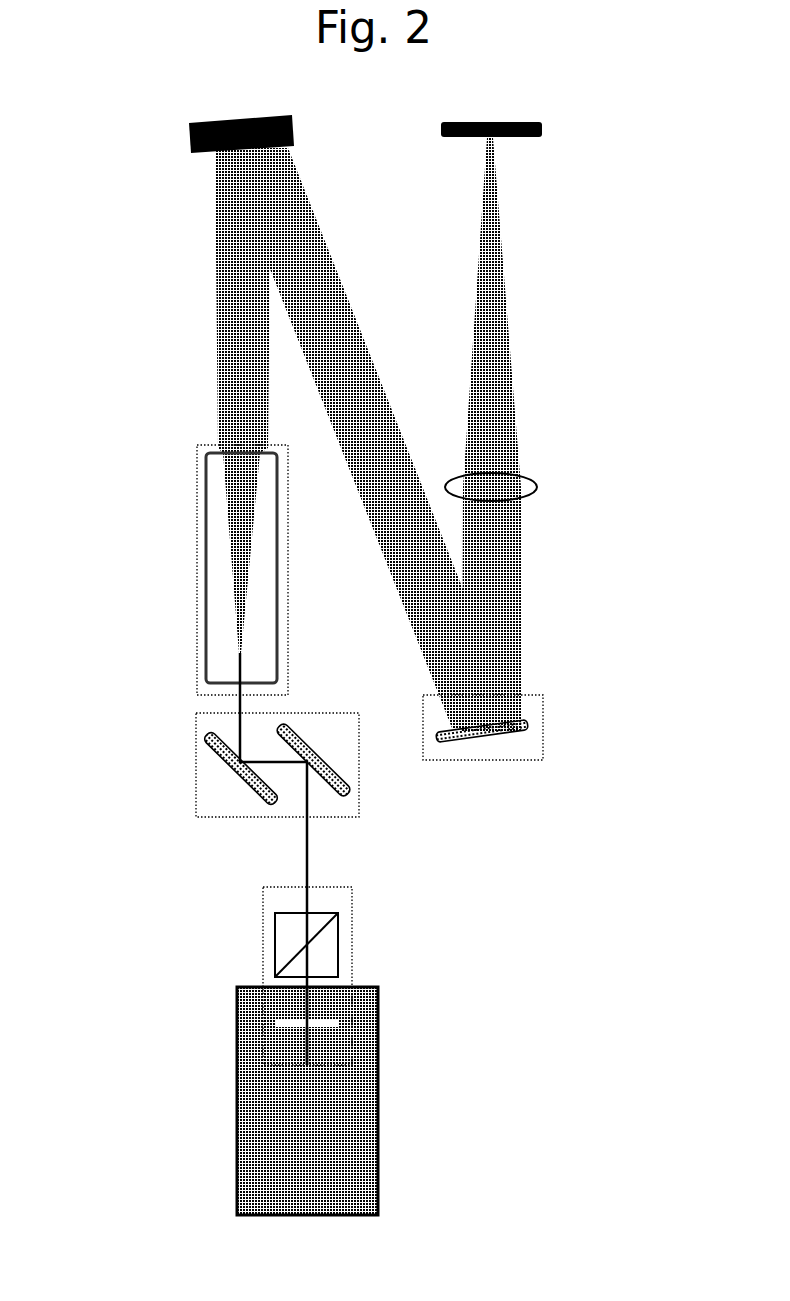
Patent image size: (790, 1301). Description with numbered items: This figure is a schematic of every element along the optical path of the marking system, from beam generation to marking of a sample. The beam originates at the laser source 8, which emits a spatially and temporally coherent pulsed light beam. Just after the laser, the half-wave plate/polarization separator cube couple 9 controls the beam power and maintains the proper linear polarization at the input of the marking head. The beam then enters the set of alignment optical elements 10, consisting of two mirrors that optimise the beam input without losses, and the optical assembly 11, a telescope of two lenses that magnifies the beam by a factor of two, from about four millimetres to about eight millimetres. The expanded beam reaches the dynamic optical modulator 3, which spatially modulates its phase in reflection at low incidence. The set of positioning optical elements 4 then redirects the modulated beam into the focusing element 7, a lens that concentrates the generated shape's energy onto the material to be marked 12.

The dynamic optical modulator 3 is at (185, 127).
The material to be marked 12 is at (542, 129).
The focusing element 7 is at (537, 487).
The set of positioning optical elements 4 is at (543, 728).
The optical assembly for redimensioning the beam 11 is at (197, 560).
The set of alignment optical elements 10 is at (196, 768).
The half-wave plate/polarization separator cube couple 9 is at (263, 945).
The laser source 8 is at (237, 1182).